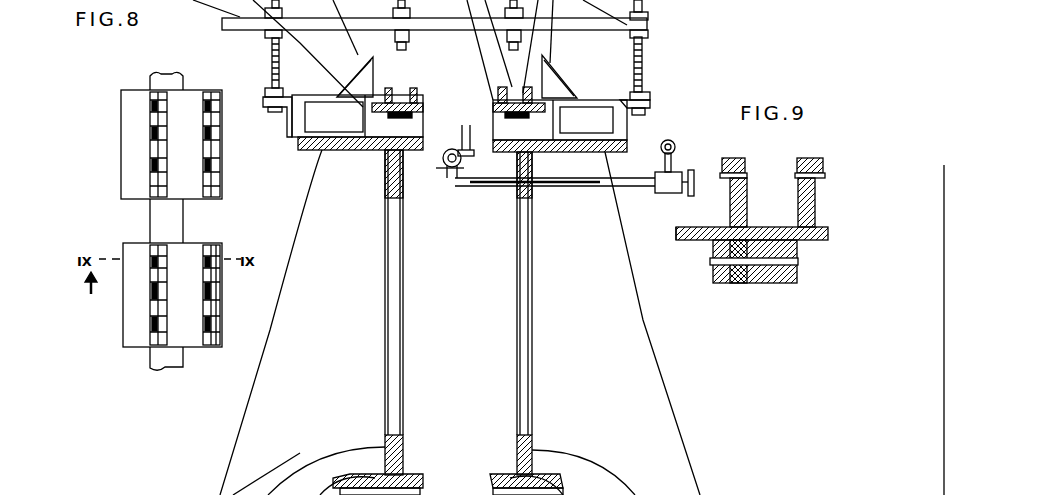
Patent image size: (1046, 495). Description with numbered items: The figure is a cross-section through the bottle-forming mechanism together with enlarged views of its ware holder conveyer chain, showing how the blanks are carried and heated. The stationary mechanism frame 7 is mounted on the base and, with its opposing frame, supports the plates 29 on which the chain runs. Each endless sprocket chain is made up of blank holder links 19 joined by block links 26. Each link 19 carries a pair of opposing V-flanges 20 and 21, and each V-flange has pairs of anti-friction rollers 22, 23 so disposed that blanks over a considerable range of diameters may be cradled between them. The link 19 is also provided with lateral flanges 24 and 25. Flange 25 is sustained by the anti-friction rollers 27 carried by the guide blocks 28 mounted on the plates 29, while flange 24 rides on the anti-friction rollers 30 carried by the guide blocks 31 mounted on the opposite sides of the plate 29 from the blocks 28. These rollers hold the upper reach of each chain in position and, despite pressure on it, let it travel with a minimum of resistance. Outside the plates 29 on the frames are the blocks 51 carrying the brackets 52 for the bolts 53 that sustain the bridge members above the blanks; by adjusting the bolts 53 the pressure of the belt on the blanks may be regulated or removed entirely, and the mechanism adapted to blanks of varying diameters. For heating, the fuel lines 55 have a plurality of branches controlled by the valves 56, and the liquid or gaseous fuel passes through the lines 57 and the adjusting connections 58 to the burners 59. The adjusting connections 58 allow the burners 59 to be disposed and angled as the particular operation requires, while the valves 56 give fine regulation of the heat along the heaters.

In FIG. 7, the stationary mechanism frame 7 is at (677, 410).
In FIG. 8, the link 19 is at (150, 91).
In FIG. 9, the link 19 is at (722, 284).
In FIG. 7, the link 19 is at (307, 150).
In FIG. 9, the V-flange 20 is at (799, 263).
In FIG. 7, the V-flange 20 is at (390, 90).
In FIG. 9, the V-flange 21 is at (803, 200).
In FIG. 7, the V-flange 21 is at (412, 100).
In FIG. 8, the anti-friction roller 22 is at (205, 105).
In FIG. 9, the anti-friction roller 22 is at (815, 158).
In FIG. 8, the anti-friction roller 23 is at (212, 132).
In FIG. 8, the lateral flange 24 is at (140, 243).
In FIG. 9, the lateral flange 24 is at (706, 241).
In FIG. 7, the lateral flange 24 is at (320, 493).
In FIG. 8, the lateral flange 25 is at (220, 350).
In FIG. 9, the lateral flange 25 is at (810, 241).
In FIG. 7, the lateral flange 25 is at (380, 150).
In FIG. 8, the block link 26 is at (162, 89).
In FIG. 9, the block link 26 is at (753, 283).
In FIG. 7, the block link 26 is at (345, 150).
In FIG. 7, the anti-friction roller 27 is at (385, 152).
In FIG. 7, the guide block 28 is at (395, 152).
In FIG. 7, the plate 29 is at (370, 150).
In FIG. 7, the anti-friction roller 30 is at (373, 107).
In FIG. 7, the guide block 31 is at (367, 112).
In FIG. 7, the block 51 is at (295, 140).
In FIG. 7, the bracket 52 is at (265, 110).
In FIG. 7, the bolt 53 is at (270, 70).
In FIG. 7, the fuel line 55 is at (672, 150).
In FIG. 7, the valve 56 is at (694, 168).
In FIG. 7, the line 57 is at (560, 186).
In FIG. 7, the adjusting connection 58 is at (465, 160).
In FIG. 7, the burner 59 is at (456, 172).